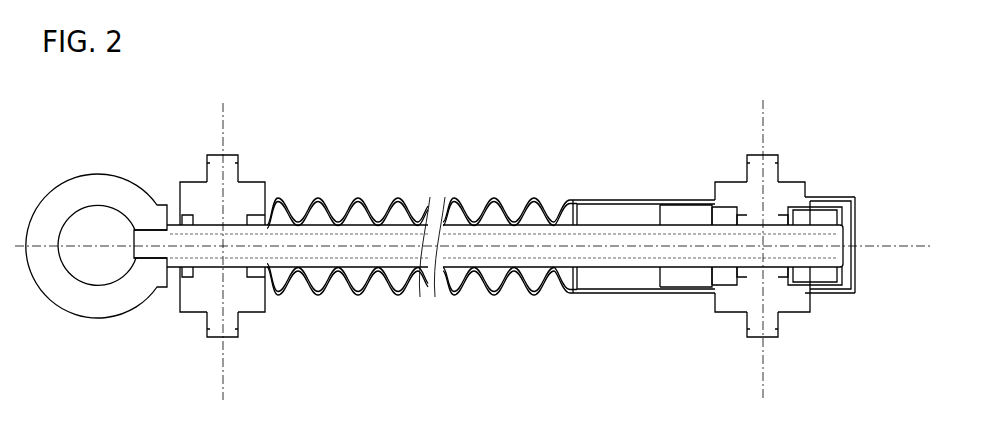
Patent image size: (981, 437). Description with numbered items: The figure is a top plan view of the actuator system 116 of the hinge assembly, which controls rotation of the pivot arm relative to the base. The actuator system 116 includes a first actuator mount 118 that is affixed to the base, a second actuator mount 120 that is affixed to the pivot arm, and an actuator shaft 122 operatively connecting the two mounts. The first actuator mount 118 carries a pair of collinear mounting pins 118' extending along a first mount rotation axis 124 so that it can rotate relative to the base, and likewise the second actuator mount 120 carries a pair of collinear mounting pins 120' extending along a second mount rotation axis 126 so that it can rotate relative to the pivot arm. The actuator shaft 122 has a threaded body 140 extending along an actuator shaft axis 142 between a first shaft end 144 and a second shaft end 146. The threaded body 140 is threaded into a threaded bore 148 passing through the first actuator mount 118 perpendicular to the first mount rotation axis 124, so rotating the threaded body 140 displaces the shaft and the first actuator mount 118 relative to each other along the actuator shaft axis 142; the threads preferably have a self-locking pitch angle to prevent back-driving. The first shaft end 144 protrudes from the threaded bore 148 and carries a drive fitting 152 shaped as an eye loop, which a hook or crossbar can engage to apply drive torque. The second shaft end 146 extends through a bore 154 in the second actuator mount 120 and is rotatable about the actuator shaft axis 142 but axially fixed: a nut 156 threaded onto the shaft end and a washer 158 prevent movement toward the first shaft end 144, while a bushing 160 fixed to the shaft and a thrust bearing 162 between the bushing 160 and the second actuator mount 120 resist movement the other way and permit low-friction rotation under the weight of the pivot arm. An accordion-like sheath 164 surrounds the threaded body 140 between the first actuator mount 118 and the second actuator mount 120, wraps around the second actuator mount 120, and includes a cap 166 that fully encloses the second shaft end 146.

The actuator system 116 is at (397, 113).
The first actuator mount 118 is at (255, 209).
The mounting pins 118' is at (265, 223).
The second actuator mount 120 is at (779, 208).
The mounting pins 120' is at (718, 241).
The actuator shaft 122 is at (460, 272).
The first mount rotation axis 124 is at (218, 363).
The second mount rotation axis 126 is at (762, 375).
The threaded body 140 is at (610, 238).
The actuator shaft axis 142 is at (96, 256).
The first shaft end 144 is at (155, 240).
The second shaft end 146 is at (856, 220).
The threaded bore 148 is at (232, 268).
The drive fitting 152 is at (83, 193).
The bore 154 is at (760, 220).
The nut 156 is at (830, 199).
The washer 158 is at (790, 300).
The bushing 160 is at (690, 212).
The thrust bearing 162 is at (730, 277).
The sheath 164 is at (465, 205).
The cap 166 is at (857, 271).